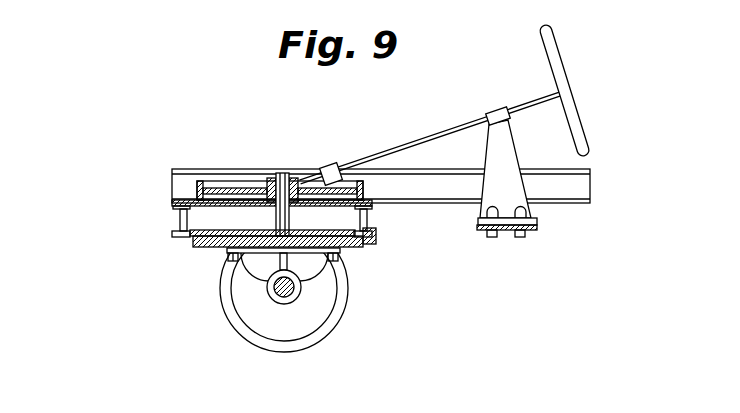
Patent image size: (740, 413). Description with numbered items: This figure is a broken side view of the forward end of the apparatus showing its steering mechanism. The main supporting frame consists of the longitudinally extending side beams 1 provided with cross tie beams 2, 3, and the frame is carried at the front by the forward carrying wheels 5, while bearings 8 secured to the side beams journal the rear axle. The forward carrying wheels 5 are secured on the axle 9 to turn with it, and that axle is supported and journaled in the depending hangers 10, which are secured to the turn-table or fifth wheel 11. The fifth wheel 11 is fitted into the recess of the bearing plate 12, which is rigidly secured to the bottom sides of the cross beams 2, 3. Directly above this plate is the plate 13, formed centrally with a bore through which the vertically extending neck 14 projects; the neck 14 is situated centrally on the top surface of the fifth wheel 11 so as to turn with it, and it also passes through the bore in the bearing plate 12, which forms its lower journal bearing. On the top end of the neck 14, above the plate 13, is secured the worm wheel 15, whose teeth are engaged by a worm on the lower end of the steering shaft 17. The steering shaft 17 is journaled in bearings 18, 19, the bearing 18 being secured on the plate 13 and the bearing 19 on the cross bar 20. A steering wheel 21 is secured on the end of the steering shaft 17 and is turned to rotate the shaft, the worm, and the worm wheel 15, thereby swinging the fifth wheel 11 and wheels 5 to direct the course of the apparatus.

The side beam 1 is at (557, 182).
The cross tie beam 2 is at (178, 221).
The cross tie beam 3 is at (368, 216).
The forward carrying wheel 5 is at (328, 328).
The bearing 8 is at (280, 170).
The axle 9 is at (277, 296).
The depending hanger 10 is at (268, 282).
The fifth wheel 11 is at (352, 243).
The bearing plate 12 is at (374, 238).
The plate 13 is at (172, 205).
The neck 14 is at (288, 176).
The worm wheel 15 is at (202, 187).
The steering shaft 17 is at (397, 146).
The bearing 18 is at (331, 165).
The bearing 19 is at (500, 108).
The cross bar 20 is at (533, 228).
The steering wheel 21 is at (570, 97).